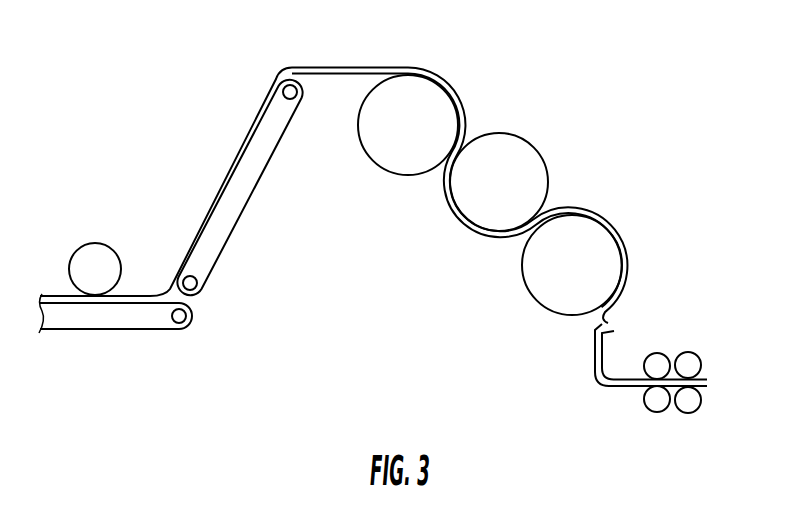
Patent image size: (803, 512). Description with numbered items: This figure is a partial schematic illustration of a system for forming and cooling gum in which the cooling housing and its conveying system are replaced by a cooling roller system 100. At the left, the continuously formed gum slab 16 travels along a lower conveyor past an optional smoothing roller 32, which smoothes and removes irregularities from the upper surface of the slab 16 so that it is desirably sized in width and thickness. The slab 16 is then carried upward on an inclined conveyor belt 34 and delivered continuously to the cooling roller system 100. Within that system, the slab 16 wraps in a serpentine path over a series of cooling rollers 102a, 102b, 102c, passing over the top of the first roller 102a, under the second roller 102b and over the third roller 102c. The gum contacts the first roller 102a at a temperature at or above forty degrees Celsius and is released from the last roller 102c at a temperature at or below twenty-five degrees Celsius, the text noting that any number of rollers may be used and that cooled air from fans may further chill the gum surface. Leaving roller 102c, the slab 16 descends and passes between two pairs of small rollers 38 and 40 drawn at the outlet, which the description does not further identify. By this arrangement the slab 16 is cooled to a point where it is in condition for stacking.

The cooling roller system 100 is at (572, 96).
The gum slab 16 is at (447, 83).
The smoothing roller 32 is at (104, 244).
The conveyor belt 34 is at (235, 198).
The first cooling roller 102a is at (397, 158).
The cooling roller 102b is at (490, 217).
The last cooling roller 102c is at (585, 243).
The nip roller pair 38 is at (653, 352).
The nip roller pair 40 is at (703, 360).